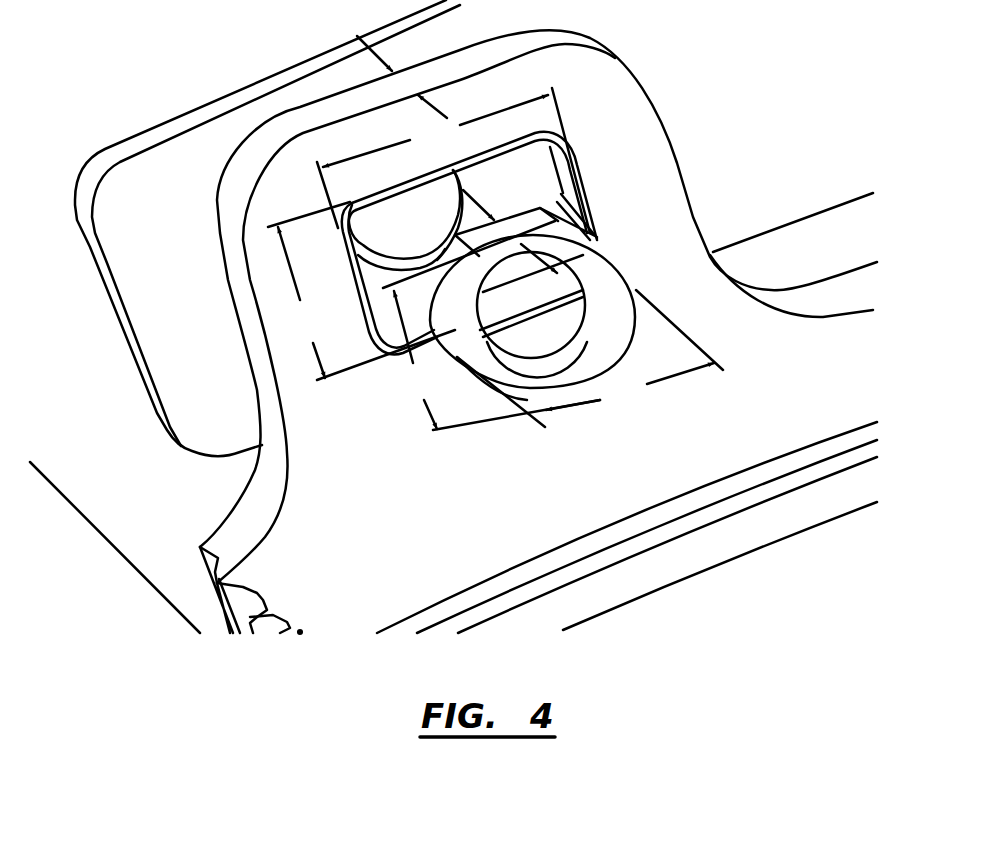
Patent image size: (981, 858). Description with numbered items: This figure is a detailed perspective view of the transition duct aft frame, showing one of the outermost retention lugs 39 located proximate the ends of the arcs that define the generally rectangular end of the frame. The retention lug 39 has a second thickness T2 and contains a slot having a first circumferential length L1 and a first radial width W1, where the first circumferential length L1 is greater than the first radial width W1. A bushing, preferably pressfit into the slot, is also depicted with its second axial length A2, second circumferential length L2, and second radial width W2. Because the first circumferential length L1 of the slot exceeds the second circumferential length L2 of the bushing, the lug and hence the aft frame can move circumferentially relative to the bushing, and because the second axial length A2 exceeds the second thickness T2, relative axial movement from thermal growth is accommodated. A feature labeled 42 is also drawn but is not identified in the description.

The outermost retention lug 39 is at (581, 38).
The opening 42 is at (424, 240).
The second thickness T2 is at (386, 64).
The first circumferential length L1 is at (453, 160).
The first radial width W1 is at (361, 291).
The second radial width W2 is at (491, 325).
The second circumferential length L2 is at (590, 358).
The second axial length A2 is at (510, 231).